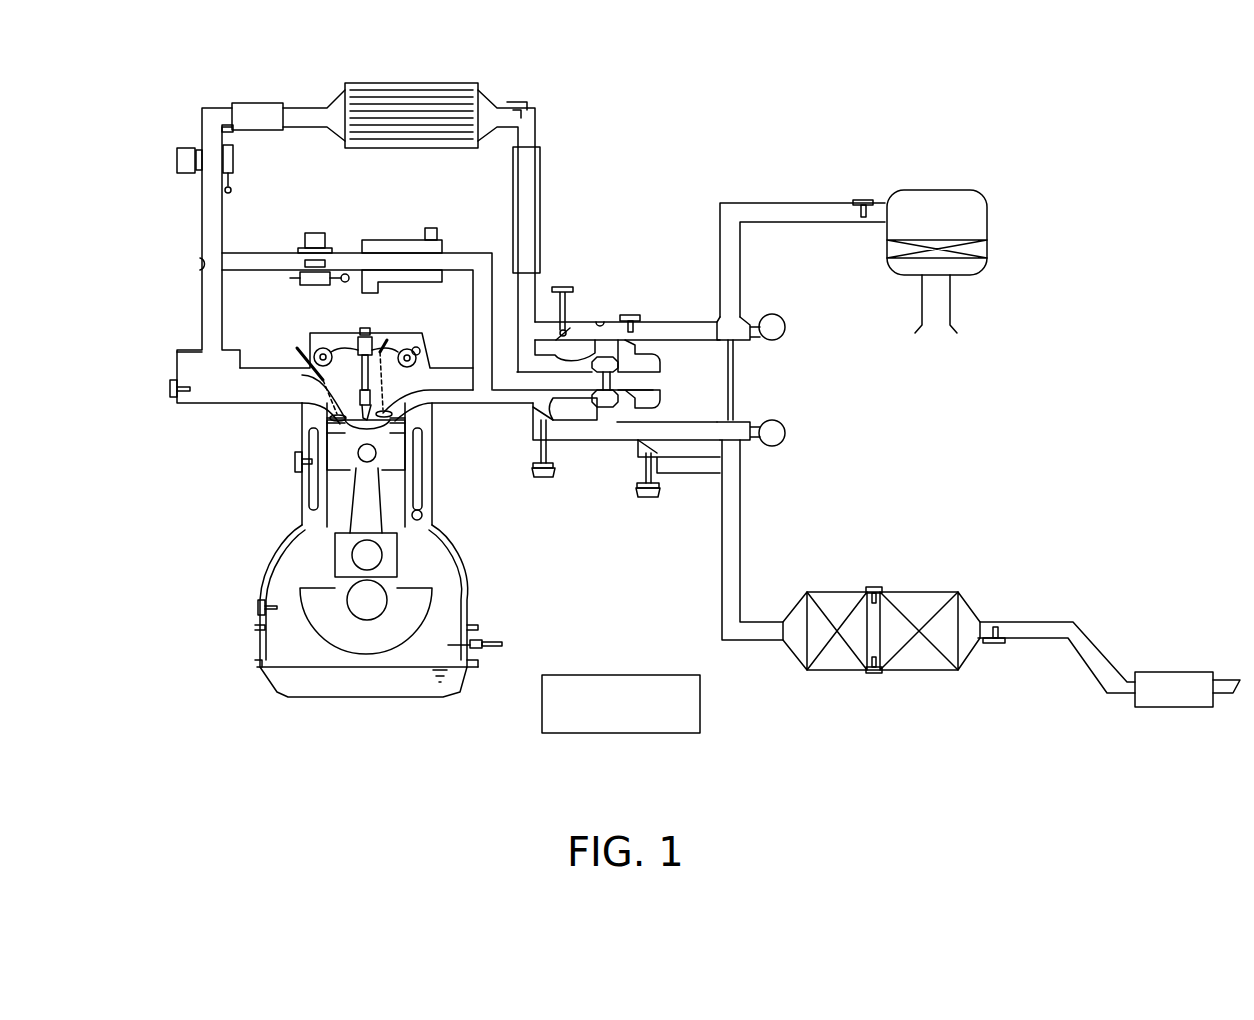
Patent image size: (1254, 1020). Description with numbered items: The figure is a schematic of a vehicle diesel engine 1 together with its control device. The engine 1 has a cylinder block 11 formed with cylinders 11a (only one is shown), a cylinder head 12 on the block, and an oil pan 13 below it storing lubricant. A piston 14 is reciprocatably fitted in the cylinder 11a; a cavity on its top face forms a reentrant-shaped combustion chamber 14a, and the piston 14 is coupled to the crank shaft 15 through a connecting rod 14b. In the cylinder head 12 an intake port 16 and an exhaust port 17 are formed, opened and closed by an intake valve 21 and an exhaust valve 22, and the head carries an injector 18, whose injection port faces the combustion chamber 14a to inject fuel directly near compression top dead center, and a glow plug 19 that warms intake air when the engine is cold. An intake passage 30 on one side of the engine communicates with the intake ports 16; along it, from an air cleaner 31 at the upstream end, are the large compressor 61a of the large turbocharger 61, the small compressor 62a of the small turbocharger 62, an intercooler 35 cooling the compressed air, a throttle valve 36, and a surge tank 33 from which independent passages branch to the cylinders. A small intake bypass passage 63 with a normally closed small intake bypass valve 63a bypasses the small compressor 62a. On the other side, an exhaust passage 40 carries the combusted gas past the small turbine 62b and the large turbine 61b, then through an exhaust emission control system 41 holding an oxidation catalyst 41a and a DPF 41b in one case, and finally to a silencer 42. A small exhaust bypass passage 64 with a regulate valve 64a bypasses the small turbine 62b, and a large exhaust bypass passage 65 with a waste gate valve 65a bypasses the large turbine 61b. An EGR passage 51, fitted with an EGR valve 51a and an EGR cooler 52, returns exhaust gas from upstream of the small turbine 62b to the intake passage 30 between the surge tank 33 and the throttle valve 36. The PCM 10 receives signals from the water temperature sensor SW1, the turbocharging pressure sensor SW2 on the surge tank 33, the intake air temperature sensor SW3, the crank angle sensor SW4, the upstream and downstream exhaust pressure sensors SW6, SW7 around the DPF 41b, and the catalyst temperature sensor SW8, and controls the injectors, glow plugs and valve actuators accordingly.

The engine 1 is at (204, 676).
The power train control module (PCM) 10 is at (577, 745).
The cylinder block 11 is at (432, 470).
The cylinder 11a is at (420, 515).
The cylinder head 12 is at (418, 355).
The oil pan 13 is at (372, 698).
The piston 14 is at (335, 480).
The combustion chamber 14a is at (385, 430).
The connecting rod 14b is at (345, 500).
The crank shaft 15 is at (366, 606).
The intake port 16 is at (330, 400).
The exhaust port 17 is at (412, 395).
The injector 18 is at (365, 330).
The glow plug 19 is at (318, 350).
The intake valve 21 is at (327, 430).
The exhaust valve 22 is at (400, 418).
The intake passage 30 is at (202, 283).
The air cleaner 31 is at (950, 190).
The surge tank 33 is at (200, 405).
The intercooler 35 is at (412, 82).
The throttle valve 36 is at (212, 150).
The exhaust passage 40 is at (722, 588).
The exhaust emission control system 41 is at (815, 512).
The oxidation catalyst 41a is at (835, 585).
The DPF 41b is at (920, 585).
The silencer 42 is at (1180, 670).
The EGR passage 51 is at (417, 275).
The EGR valve 51a is at (327, 263).
The EGR cooler 52 is at (398, 250).
The large turbocharger 61 is at (858, 345).
The large compressor 61a is at (755, 330).
The large turbine 61b is at (755, 435).
The small turbocharger 62 is at (652, 178).
The small compressor 62a is at (622, 363).
The small turbine 62b is at (640, 407).
The small intake bypass passage 63 is at (600, 322).
The small intake bypass valve 63a is at (575, 327).
The small exhaust bypass passage 64 is at (570, 440).
The regulate valve 64a is at (538, 418).
The large exhaust bypass passage 65 is at (682, 470).
The waste gate valve 65a is at (642, 450).
The water temperature sensor SW1 is at (302, 462).
The turbocharging pressure sensor SW2 is at (172, 390).
The intake air temperature sensor SW3 is at (864, 198).
The crank angle sensor SW4 is at (258, 606).
The upstream exhaust pressure sensor SW6 is at (874, 675).
The downstream exhaust pressure sensor SW7 is at (998, 646).
The catalyst temperature sensor SW8 is at (874, 587).